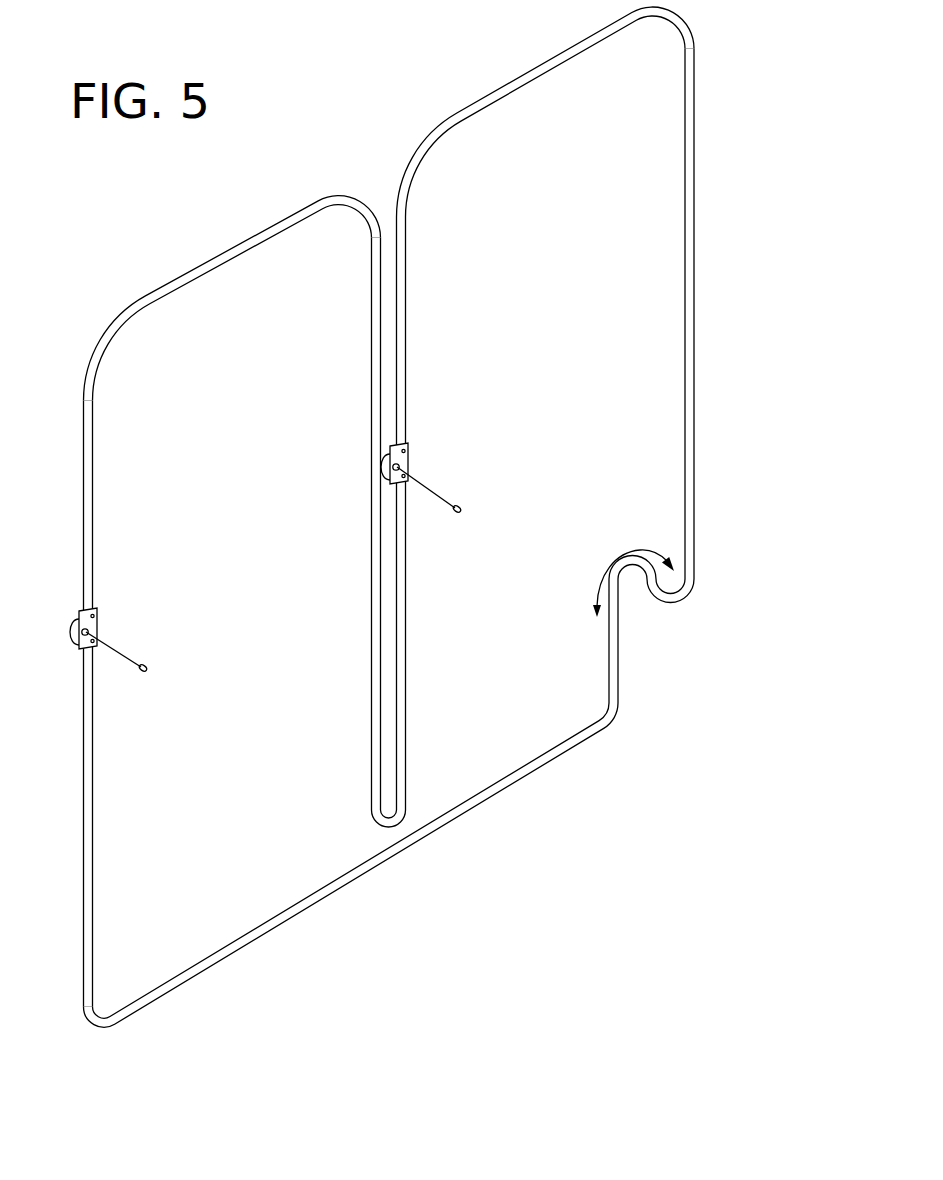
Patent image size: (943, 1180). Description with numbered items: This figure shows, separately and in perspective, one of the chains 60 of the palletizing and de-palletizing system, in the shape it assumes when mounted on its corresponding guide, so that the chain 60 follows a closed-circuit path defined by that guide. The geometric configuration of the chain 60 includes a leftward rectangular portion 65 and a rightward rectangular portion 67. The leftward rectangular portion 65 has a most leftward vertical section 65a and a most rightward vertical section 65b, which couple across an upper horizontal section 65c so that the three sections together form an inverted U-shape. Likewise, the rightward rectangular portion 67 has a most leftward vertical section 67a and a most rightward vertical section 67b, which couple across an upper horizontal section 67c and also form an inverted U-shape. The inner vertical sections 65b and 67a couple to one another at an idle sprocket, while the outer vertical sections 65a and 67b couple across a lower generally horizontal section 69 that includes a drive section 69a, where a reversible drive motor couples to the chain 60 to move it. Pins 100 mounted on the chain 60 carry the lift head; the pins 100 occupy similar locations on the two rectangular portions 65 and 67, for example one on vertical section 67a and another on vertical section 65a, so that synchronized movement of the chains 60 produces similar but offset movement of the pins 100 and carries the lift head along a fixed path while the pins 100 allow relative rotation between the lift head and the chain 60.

The chain 60 is at (413, 517).
The leftward rectangular portion 65 is at (204, 603).
The most leftward vertical section 65a is at (92, 518).
The most rightward vertical section 65b is at (372, 568).
The upper horizontal section 65c is at (214, 270).
The rightward rectangular portion 67 is at (585, 417).
The most leftward vertical section 67a is at (405, 385).
The most rightward vertical section 67b is at (695, 290).
The upper horizontal section 67c is at (545, 72).
The lower generally horizontal section 69 is at (475, 822).
The drive section 69a is at (638, 577).
The pin 100 is at (118, 652).